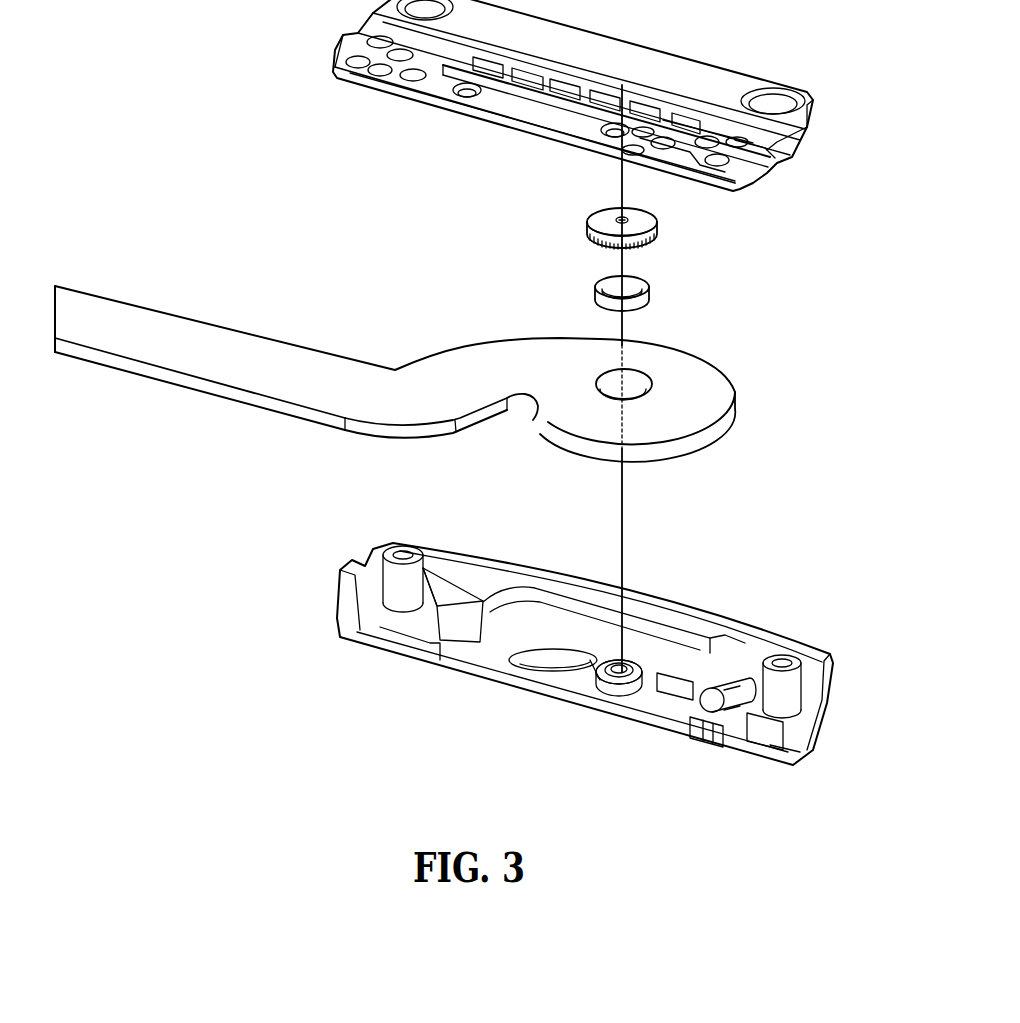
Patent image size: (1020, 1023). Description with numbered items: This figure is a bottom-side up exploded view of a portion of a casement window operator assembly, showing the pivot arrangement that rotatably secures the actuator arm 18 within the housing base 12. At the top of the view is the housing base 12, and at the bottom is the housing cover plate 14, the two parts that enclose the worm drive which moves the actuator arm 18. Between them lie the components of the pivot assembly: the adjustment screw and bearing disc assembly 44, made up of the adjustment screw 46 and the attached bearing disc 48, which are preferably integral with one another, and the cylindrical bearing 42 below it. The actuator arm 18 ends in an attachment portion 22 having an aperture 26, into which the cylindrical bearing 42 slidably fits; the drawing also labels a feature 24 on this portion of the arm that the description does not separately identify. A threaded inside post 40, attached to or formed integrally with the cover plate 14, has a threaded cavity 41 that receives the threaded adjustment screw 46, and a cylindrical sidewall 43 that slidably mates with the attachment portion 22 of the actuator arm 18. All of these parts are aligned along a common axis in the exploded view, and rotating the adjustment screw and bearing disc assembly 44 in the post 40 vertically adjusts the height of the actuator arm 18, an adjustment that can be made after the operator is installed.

The housing base 12 is at (803, 132).
The housing cover plate 14 is at (585, 681).
The actuator arm 18 is at (227, 367).
The attachment portion 22 is at (636, 401).
The disc edge 24 is at (714, 436).
The aperture 26 is at (612, 388).
The threaded inside post 40 is at (642, 651).
The threaded cavity 41 is at (605, 678).
The cylindrical bearing 42 is at (678, 304).
The cylindrical sidewall 43 is at (615, 690).
The adjustment screw and bearing disc assembly 44 is at (637, 239).
The adjustment screw 46 is at (616, 244).
The bearing disc 48 is at (596, 219).